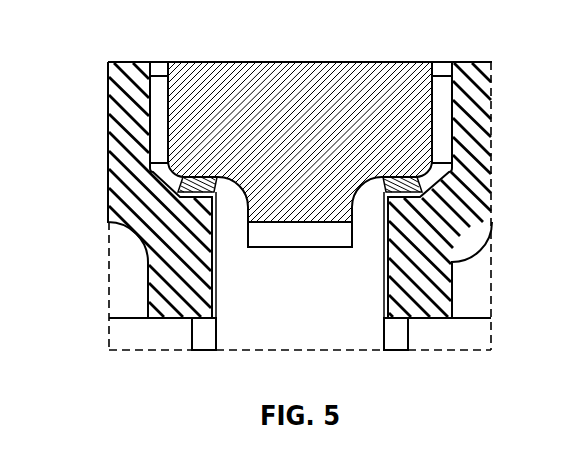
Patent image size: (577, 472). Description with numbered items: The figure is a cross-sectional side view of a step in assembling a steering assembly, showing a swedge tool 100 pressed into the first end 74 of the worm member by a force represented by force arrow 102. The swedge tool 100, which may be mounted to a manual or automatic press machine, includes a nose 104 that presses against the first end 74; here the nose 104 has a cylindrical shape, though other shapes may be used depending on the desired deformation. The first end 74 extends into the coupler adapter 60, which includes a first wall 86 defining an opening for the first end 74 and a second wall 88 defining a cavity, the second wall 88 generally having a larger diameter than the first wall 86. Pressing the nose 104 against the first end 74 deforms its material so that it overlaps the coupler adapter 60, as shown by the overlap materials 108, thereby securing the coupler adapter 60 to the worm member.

The coupler adapter 60 is at (482, 68).
The first end 74 is at (347, 335).
The first wall 86 is at (452, 297).
The second wall 88 is at (492, 115).
The swedge tool 100 is at (372, 79).
The force arrow 102 is at (300, 62).
The nose 104 is at (248, 222).
The overlap materials 108 is at (184, 193).